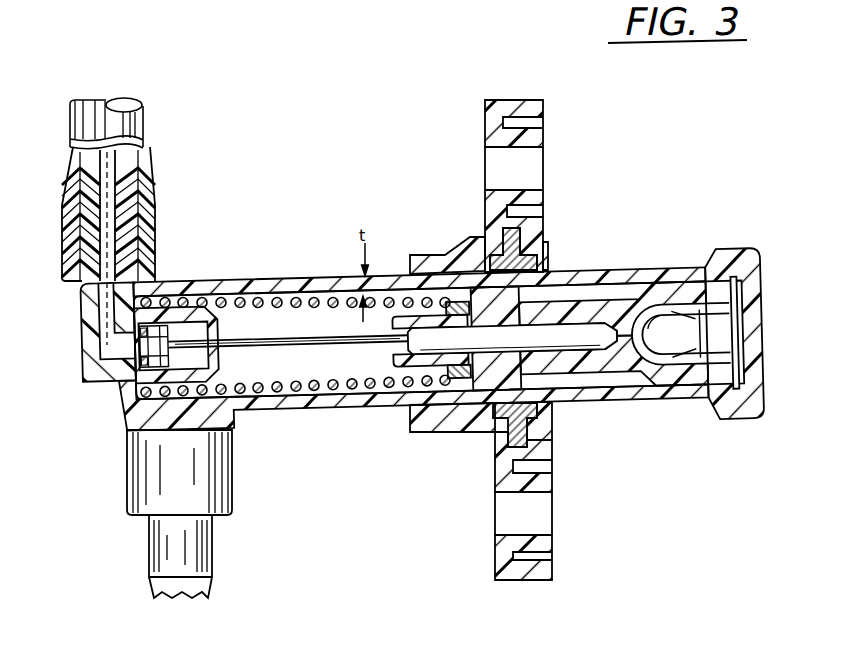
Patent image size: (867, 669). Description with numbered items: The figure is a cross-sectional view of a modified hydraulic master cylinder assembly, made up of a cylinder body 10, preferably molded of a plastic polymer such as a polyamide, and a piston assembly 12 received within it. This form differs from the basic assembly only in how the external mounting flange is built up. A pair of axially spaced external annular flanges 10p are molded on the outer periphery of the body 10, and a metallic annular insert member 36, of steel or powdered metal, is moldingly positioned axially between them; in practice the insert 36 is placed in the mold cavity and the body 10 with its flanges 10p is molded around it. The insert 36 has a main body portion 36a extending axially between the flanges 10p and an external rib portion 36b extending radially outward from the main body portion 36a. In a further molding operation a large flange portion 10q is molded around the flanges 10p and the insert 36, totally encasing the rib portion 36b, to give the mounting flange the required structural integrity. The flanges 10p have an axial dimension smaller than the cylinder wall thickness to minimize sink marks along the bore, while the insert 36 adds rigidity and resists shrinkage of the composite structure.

The cylinder body 10 is at (277, 275).
The external annular flanges 10p is at (467, 430).
The large flange portion 10q is at (410, 257).
The piston assembly 12 is at (606, 298).
The metallic annular insert member 36 is at (516, 236).
The main body portion 36a is at (497, 443).
The external rib portion 36b is at (538, 455).